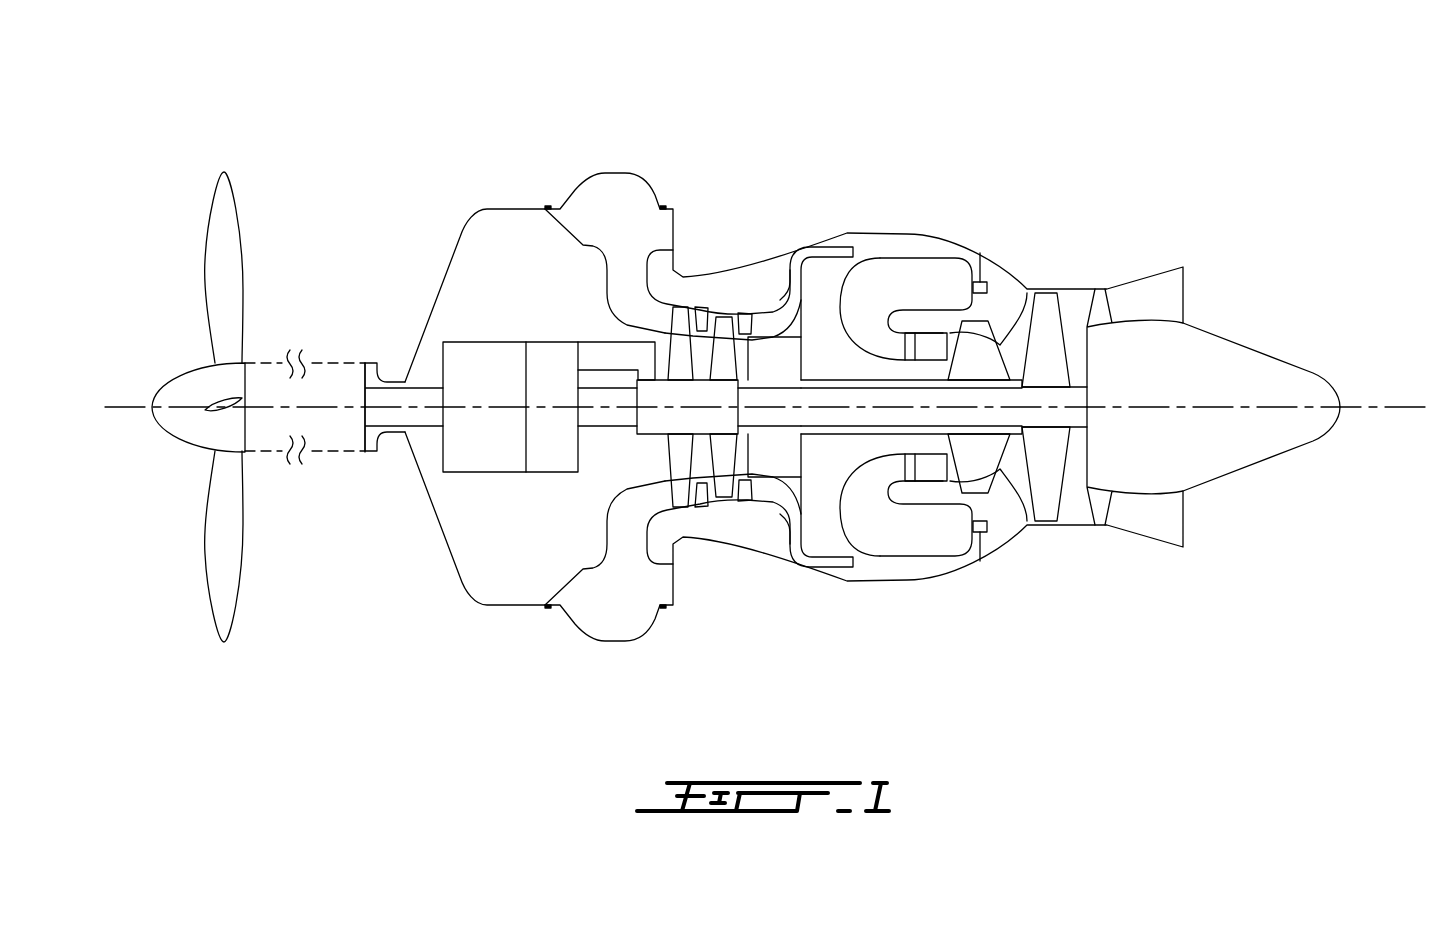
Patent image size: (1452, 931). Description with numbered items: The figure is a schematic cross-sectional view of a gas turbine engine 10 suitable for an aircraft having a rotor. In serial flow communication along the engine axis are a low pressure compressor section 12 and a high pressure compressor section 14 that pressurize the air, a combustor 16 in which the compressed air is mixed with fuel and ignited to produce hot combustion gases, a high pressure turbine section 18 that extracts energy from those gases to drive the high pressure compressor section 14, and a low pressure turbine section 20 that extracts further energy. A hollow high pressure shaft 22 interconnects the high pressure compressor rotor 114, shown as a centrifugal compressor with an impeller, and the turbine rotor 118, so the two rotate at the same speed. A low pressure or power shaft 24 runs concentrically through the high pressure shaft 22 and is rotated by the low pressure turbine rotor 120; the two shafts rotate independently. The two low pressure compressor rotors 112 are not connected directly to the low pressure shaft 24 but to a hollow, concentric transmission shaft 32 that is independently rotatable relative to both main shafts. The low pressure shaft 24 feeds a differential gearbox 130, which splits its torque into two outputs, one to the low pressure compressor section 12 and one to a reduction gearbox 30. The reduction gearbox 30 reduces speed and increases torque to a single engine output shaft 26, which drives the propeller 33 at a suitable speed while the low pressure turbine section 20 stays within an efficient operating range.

The gas turbine engine 10 is at (1152, 181).
The low pressure compressor section 12 is at (663, 327).
The high pressure compressor section 14 is at (767, 350).
The combustor 16 is at (915, 292).
The high pressure turbine section 18 is at (980, 320).
The low pressure turbine section 20 is at (1047, 282).
The high pressure shaft 22 is at (832, 435).
The low pressure shaft 24 is at (782, 440).
The engine output shaft 26 is at (423, 418).
The reduction gearbox 30 is at (482, 367).
The transmission shaft 32 is at (650, 434).
The propeller 33 is at (228, 298).
The low pressure compressor rotor 112 is at (680, 493).
The high pressure compressor rotor 114 is at (773, 280).
The turbine rotor 118 is at (985, 470).
The low pressure turbine rotor 120 is at (1047, 498).
The differential gearbox 130 is at (552, 443).